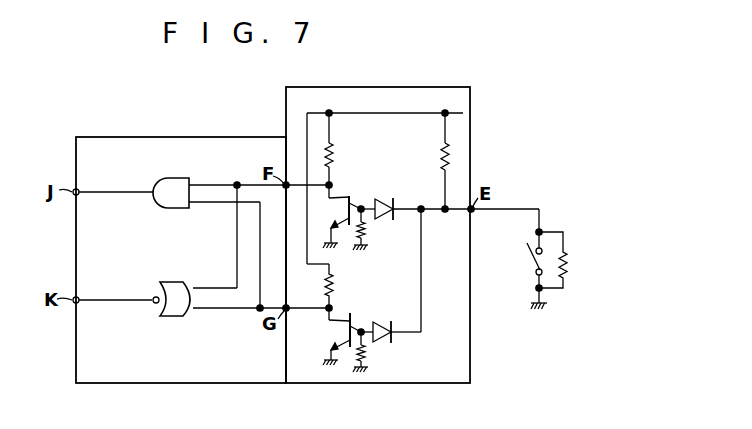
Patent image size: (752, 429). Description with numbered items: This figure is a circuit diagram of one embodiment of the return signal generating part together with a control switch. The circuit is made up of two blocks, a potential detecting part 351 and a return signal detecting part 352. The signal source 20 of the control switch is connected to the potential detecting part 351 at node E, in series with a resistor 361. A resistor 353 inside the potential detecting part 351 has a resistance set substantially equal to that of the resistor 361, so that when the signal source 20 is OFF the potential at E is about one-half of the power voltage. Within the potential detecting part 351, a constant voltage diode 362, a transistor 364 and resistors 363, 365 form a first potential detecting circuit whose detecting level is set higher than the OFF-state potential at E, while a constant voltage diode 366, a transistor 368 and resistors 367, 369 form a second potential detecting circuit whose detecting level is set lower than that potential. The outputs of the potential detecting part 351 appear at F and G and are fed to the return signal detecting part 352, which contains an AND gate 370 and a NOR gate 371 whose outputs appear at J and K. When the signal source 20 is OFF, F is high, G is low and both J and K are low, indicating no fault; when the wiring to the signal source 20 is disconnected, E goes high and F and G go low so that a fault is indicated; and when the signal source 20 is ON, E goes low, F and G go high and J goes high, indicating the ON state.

The AND gate 370 is at (177, 178).
The NOR gate 371 is at (179, 281).
The return signal detecting part 352 is at (153, 384).
The potential detecting part 351 is at (409, 384).
The resistor 365 is at (333, 148).
The transistor 364 is at (337, 198).
The constant voltage diode 362 is at (385, 204).
The resistor 363 is at (367, 226).
The resistor 353 is at (448, 155).
The resistor 369 is at (326, 291).
The transistor 368 is at (338, 318).
The constant voltage diode 366 is at (382, 318).
The resistor 367 is at (367, 349).
The signal source of the control switch 20 is at (536, 263).
The resistor 361 is at (567, 262).